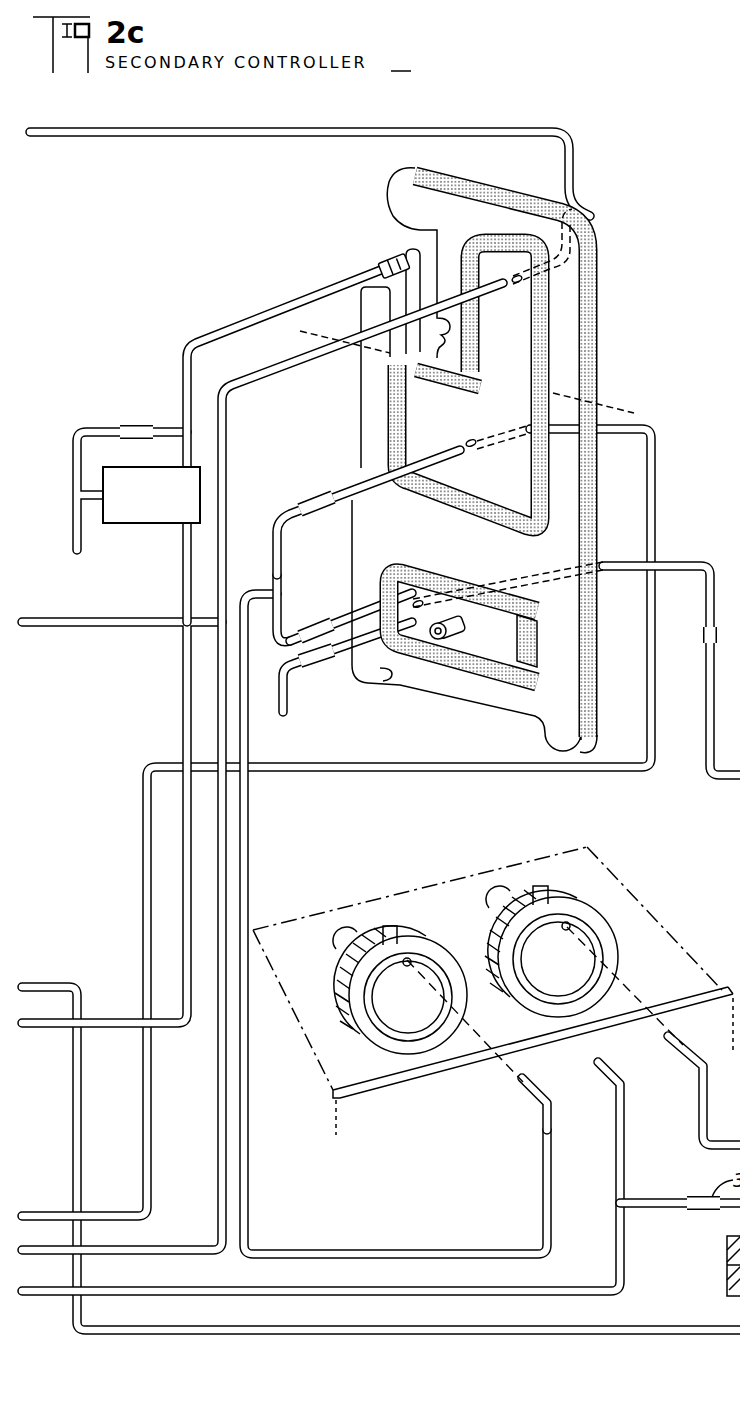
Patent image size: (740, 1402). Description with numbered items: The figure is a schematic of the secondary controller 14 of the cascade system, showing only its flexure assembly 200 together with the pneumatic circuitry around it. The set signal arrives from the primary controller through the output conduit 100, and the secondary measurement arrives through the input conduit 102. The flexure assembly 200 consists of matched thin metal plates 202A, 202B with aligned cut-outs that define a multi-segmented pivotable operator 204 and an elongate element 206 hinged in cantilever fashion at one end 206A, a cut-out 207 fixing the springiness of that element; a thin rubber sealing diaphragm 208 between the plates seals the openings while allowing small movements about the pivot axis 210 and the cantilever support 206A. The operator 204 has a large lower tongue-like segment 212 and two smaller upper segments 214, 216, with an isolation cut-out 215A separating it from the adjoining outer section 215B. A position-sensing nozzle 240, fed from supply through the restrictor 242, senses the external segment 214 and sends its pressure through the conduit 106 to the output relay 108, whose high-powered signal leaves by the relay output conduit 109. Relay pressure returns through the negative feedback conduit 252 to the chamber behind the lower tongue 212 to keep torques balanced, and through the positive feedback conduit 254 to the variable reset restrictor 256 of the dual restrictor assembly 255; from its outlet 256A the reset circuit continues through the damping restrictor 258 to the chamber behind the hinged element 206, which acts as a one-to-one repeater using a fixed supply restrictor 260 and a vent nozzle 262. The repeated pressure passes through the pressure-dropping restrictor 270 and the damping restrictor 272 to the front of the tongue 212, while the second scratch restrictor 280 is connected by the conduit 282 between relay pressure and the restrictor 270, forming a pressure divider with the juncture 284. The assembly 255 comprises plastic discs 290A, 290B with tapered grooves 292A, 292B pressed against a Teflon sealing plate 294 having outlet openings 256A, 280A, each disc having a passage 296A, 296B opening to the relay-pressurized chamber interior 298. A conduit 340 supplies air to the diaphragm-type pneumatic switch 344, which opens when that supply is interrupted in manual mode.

The secondary controller 14 is at (403, 62).
The output conduit 100 is at (60, 137).
The input conduit 102 is at (284, 368).
The output conduit 106 is at (248, 318).
The output relay 108 is at (165, 506).
The relay output conduit 109 is at (181, 656).
The flexure assembly 200 is at (612, 262).
The thin metal plate 202A is at (408, 195).
The thin metal plate 202B is at (452, 172).
The pivotable operator 204 is at (521, 382).
The elongate element 206 is at (477, 652).
The cantilever support end 206A is at (538, 617).
The cut-out 207 is at (517, 641).
The sealing diaphragm 208 is at (420, 173).
The pivot axis 210 is at (333, 325).
The tongue-like segment 212 is at (498, 488).
The tongue-like segment 214 is at (406, 252).
The isolation cut-out 215A is at (430, 384).
The outer section 215B is at (447, 264).
The tongue-like segment 216 is at (522, 329).
The position-sensing nozzle 240 is at (380, 262).
The restrictor 242 is at (137, 428).
The negative feedback conduit 252 is at (660, 490).
The positive feedback conduit 254 is at (45, 1298).
The dual restrictor assembly 255 is at (414, 874).
The reset restrictor 256 is at (620, 918).
The outlet opening 256A is at (672, 1055).
The damping restrictor 258 is at (706, 653).
The fixed restrictor 260 is at (315, 662).
The vent nozzle 262 is at (446, 641).
The pressure-dropping restrictor 270 is at (322, 624).
The damping restrictor 272 is at (333, 505).
The scratch restrictor 280 is at (318, 982).
The outlet opening 280A is at (517, 1083).
The conduit 282 is at (250, 812).
The juncture 284 is at (272, 593).
The plastic disc 290A is at (346, 1030).
The plastic disc 290B is at (619, 957).
The tapered groove 292A is at (377, 983).
The tapered groove 292B is at (530, 953).
The sealing plate 294 is at (358, 1116).
The passage 296A is at (408, 960).
The passage 296B is at (567, 923).
The chamber interior 298 is at (511, 1030).
The conduit 340 is at (36, 984).
The pneumatic switch 344 is at (716, 1250).